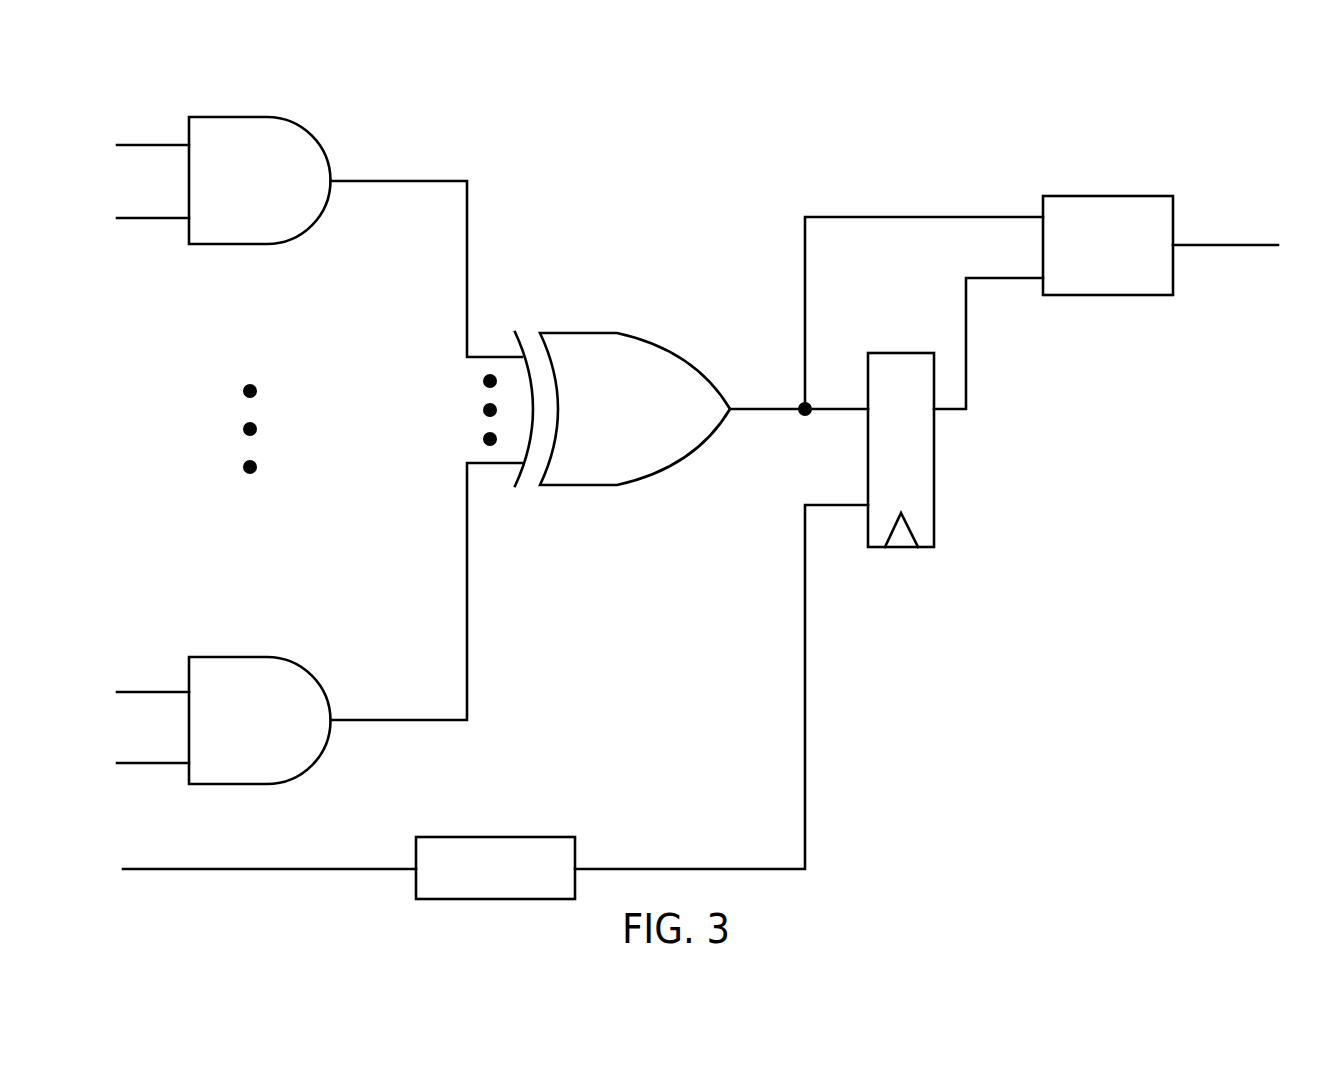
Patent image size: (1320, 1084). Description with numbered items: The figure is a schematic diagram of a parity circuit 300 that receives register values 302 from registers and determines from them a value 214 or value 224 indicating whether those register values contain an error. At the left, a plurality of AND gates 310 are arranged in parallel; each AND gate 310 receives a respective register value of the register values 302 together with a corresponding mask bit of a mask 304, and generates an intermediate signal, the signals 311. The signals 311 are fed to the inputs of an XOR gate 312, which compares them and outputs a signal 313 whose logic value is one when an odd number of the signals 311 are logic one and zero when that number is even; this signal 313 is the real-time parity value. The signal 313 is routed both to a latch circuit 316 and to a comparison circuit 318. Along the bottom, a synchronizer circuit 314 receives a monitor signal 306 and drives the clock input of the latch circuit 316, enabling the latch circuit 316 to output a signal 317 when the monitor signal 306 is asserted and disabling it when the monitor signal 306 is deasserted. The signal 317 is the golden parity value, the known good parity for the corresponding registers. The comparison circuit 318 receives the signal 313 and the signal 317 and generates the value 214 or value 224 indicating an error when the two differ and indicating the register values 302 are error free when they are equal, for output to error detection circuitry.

The parity circuit 300 is at (1195, 92).
The register values 302 is at (151, 396).
The mask 304 is at (151, 469).
The monitor signal 306 is at (269, 851).
The AND gates 310 is at (277, 736).
The signals 311 is at (427, 429).
The XOR gate 312 is at (650, 422).
The signal 313 is at (886, 316).
The synchronizer circuit 314 is at (517, 883).
The latch circuit 316 is at (924, 466).
The signal 317 is at (988, 325).
The comparison circuit 318 is at (1130, 255).
The value 214 is at (1231, 227).
The value 224 is at (1231, 227).